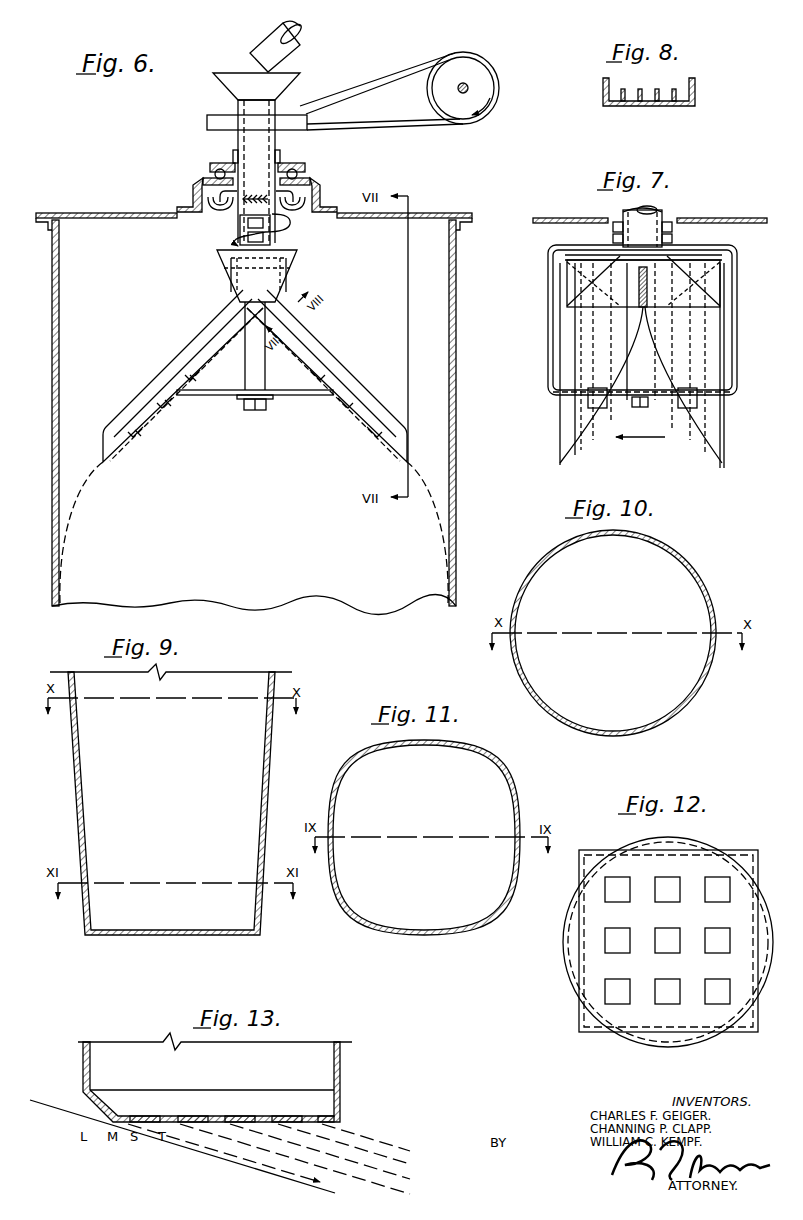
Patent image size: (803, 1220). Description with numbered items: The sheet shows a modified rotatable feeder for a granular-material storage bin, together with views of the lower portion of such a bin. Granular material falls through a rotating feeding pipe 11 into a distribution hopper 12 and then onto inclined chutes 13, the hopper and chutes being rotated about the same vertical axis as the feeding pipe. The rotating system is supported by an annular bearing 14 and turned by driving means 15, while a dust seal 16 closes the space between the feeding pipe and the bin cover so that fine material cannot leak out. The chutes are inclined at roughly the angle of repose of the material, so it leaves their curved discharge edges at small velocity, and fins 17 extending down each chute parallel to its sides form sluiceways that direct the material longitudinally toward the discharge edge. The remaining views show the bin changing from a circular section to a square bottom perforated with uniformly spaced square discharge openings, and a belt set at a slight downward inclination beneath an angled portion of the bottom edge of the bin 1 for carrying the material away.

In FIG. 13, the container 1 is at (324, 1069).
In FIG. 6, the rotating feeding pipe 11 is at (282, 146).
In FIG. 6, the distribution hopper 12 is at (221, 266).
In FIG. 6, the inclined chutes 13 is at (195, 348).
In FIG. 6, the annular bearing 14 is at (216, 164).
In FIG. 6, the driving means 15 is at (486, 76).
In FIG. 6, the dust seal 16 is at (312, 219).
In FIG. 8, the fins 17 is at (646, 92).
In FIG. 7, the fins 17 is at (580, 440).